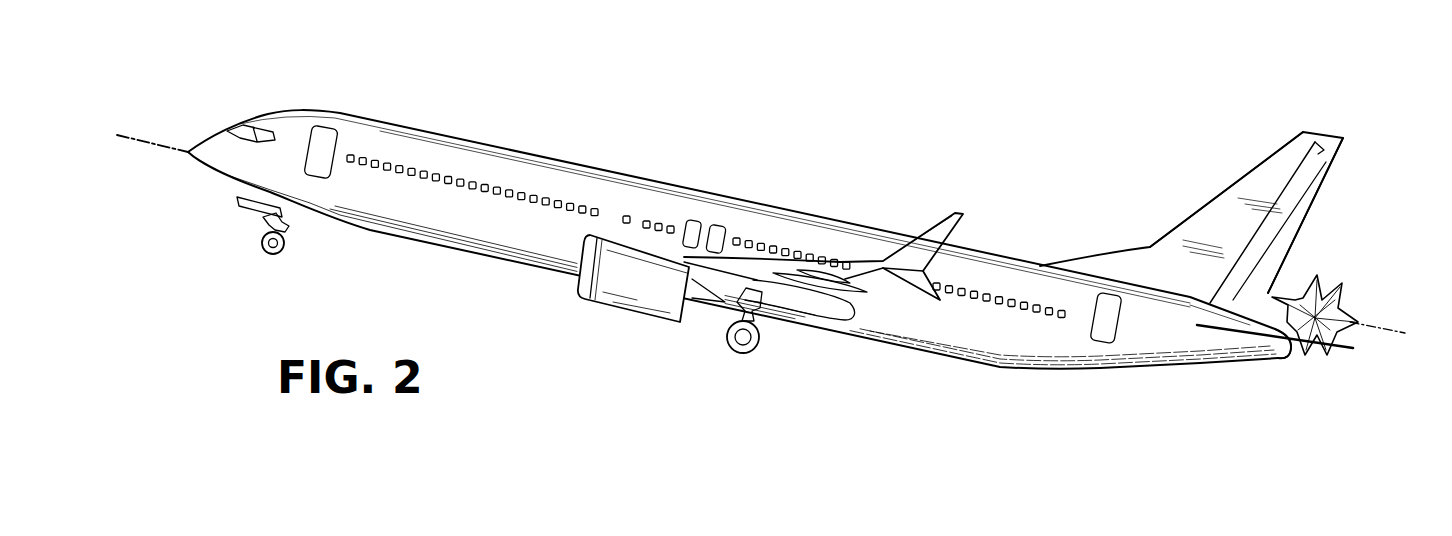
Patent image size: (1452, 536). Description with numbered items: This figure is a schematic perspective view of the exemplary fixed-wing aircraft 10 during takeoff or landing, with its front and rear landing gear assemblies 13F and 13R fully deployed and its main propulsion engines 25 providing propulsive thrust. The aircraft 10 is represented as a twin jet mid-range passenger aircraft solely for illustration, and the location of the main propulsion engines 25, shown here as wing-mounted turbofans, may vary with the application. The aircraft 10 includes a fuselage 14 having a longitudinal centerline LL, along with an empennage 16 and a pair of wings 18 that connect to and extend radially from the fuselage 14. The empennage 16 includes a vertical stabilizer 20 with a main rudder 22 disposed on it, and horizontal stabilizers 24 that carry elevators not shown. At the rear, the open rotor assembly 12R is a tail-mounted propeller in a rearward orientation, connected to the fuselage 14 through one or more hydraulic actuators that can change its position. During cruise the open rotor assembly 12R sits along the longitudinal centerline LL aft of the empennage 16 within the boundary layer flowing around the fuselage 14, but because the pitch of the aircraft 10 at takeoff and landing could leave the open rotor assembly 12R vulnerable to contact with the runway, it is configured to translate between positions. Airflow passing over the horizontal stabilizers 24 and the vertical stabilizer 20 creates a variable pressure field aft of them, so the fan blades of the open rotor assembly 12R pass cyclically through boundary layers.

The fixed-wing aircraft 10 is at (1033, 170).
The open rotor assembly 12R is at (1383, 307).
The front landing gear assembly 13F is at (263, 260).
The rear landing gear assembly 13R is at (758, 373).
The fuselage 14 is at (527, 267).
The empennage 16 is at (1233, 240).
The wings 18 is at (847, 257).
The vertical stabilizer 20 is at (1208, 197).
The main rudder 22 is at (1332, 172).
The horizontal stabilizers 24 is at (1282, 360).
The main propulsion engines 25 is at (641, 284).
The longitudinal centerline LL is at (142, 143).